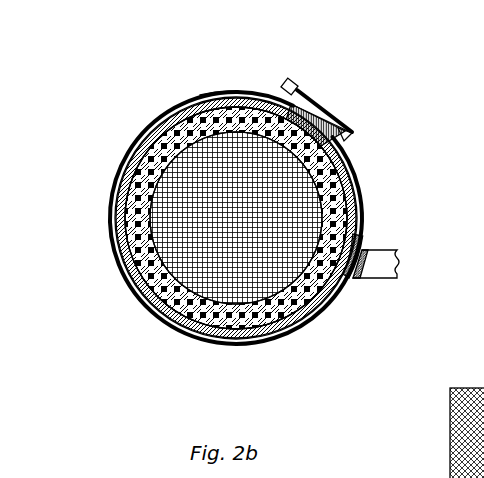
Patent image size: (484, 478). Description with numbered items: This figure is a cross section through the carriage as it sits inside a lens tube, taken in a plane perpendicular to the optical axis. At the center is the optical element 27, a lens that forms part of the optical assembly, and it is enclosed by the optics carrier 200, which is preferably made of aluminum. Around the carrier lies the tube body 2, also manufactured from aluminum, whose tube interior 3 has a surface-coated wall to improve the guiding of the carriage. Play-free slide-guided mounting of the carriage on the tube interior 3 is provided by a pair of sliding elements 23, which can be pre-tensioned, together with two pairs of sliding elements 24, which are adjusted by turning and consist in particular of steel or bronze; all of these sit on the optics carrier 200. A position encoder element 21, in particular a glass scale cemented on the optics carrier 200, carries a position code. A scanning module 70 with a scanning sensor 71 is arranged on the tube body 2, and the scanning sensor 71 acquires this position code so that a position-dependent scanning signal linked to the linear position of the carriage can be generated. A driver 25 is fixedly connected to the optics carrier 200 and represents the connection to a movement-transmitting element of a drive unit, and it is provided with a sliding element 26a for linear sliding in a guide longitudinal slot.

The tube body 2 is at (462, 468).
The tube interior 3 is at (198, 218).
The position encoder element 21 is at (382, 140).
The sliding elements which can be pre-tensioned 23 is at (179, 65).
The sliding elements which are turned for adjustment 24 is at (262, 191).
The driver 25 is at (398, 240).
The sliding element 26a is at (400, 223).
The optical element 27 is at (206, 254).
The scanning module 70 is at (335, 54).
The scanning sensor 71 is at (353, 97).
The optics carrier 200 is at (182, 100).